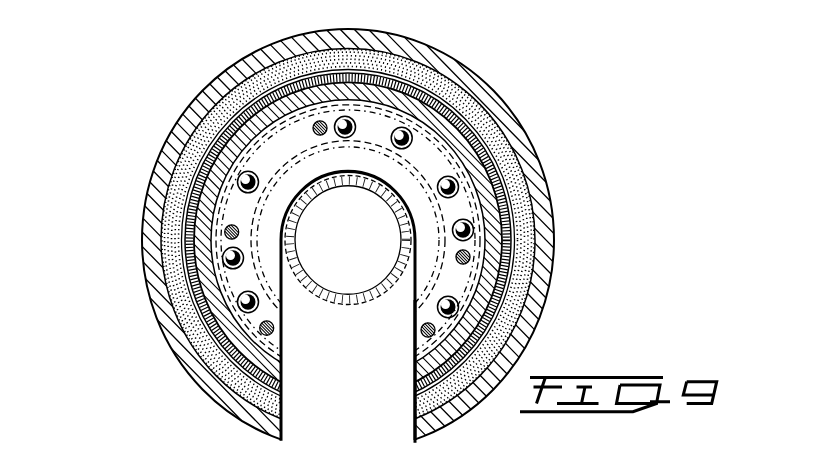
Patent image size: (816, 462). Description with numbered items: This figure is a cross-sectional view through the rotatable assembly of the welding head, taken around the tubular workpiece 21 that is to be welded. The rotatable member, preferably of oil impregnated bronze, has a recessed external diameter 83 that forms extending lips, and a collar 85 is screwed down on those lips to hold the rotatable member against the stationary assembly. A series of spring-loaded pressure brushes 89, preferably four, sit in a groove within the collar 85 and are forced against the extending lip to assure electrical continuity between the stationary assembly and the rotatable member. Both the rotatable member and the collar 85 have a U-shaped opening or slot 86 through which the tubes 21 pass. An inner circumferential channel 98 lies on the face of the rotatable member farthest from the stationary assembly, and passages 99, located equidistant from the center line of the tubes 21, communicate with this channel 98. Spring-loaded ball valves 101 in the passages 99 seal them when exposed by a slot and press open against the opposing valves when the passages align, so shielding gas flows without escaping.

The collar 85 is at (526, 160).
The spring-loaded pressure brushes 89 is at (527, 289).
The recessed external diameter 83 is at (507, 243).
The passages 99 is at (393, 132).
The spring-loaded ball valves 101 is at (252, 173).
The tubes 21 is at (344, 318).
The U-shaped opening or slot 86 is at (348, 387).
The inner circumferential channel 98 is at (421, 346).